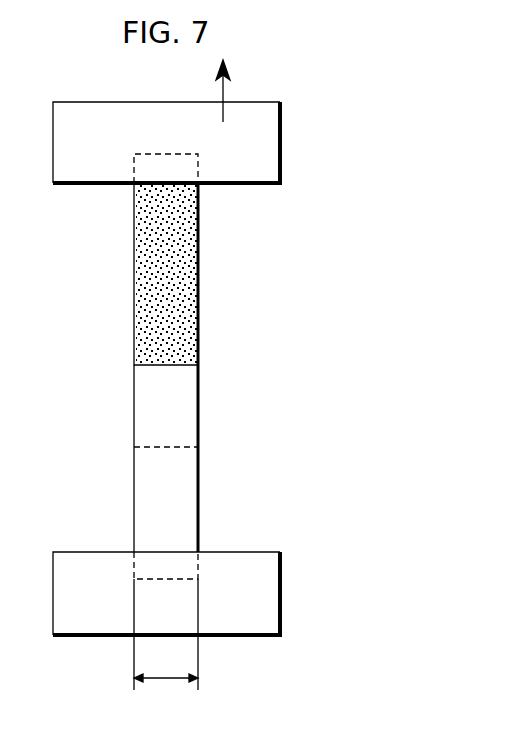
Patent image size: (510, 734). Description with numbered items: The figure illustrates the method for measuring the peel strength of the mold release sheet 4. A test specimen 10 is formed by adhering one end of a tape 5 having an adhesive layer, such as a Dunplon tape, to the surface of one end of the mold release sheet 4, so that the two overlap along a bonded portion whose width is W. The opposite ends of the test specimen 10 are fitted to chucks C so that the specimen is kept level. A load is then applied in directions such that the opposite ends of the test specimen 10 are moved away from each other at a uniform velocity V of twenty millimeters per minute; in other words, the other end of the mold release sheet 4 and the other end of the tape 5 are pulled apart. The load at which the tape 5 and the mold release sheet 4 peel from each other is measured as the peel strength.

The test specimen 10 is at (322, 230).
The chucks C is at (263, 145).
The mold release sheet 4 is at (182, 307).
The tape 5 is at (182, 487).